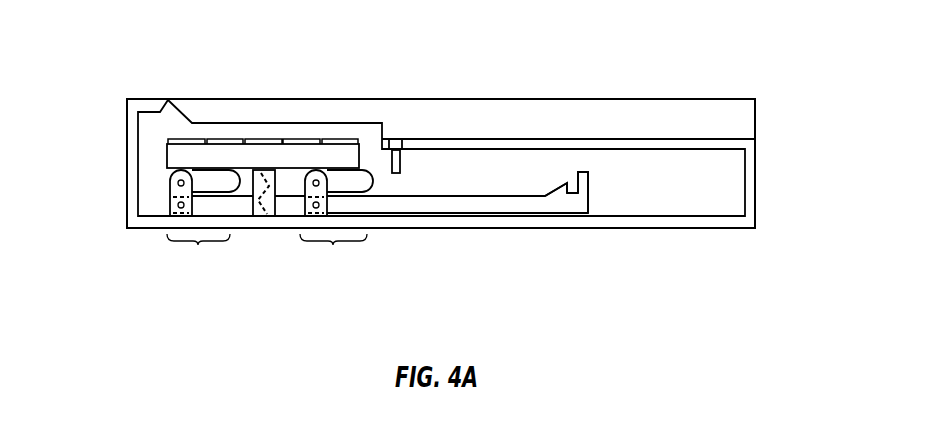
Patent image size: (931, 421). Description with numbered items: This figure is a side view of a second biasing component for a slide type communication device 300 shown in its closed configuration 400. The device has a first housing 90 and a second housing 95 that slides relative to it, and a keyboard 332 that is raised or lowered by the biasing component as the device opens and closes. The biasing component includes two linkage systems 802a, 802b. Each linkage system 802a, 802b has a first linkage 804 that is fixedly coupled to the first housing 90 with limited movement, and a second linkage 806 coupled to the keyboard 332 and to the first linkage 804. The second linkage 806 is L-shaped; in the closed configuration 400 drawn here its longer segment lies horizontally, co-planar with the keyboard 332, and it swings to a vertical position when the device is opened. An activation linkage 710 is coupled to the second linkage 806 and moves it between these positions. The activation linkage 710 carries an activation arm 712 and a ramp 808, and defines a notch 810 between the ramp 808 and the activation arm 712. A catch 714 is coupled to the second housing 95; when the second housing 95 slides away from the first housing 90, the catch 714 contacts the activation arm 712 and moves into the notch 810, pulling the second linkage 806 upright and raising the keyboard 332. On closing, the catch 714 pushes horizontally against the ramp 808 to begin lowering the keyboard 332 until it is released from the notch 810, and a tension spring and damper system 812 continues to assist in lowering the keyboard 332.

The closed configuration 400 is at (126, 58).
The communication device 300 is at (463, 39).
The first housing 90 is at (717, 228).
The second housing 95 is at (567, 99).
The catch 714 is at (396, 160).
The keyboard 332 is at (175, 157).
The first linkage 804 is at (178, 189).
The second linkage 806 is at (220, 182).
The tension spring and damper system 812 is at (267, 180).
The linkage system 802b is at (198, 245).
The linkage system 802a is at (333, 245).
The activation linkage 710 is at (422, 202).
The ramp 808 is at (563, 193).
The notch 810 is at (580, 195).
The activation arm 712 is at (597, 190).